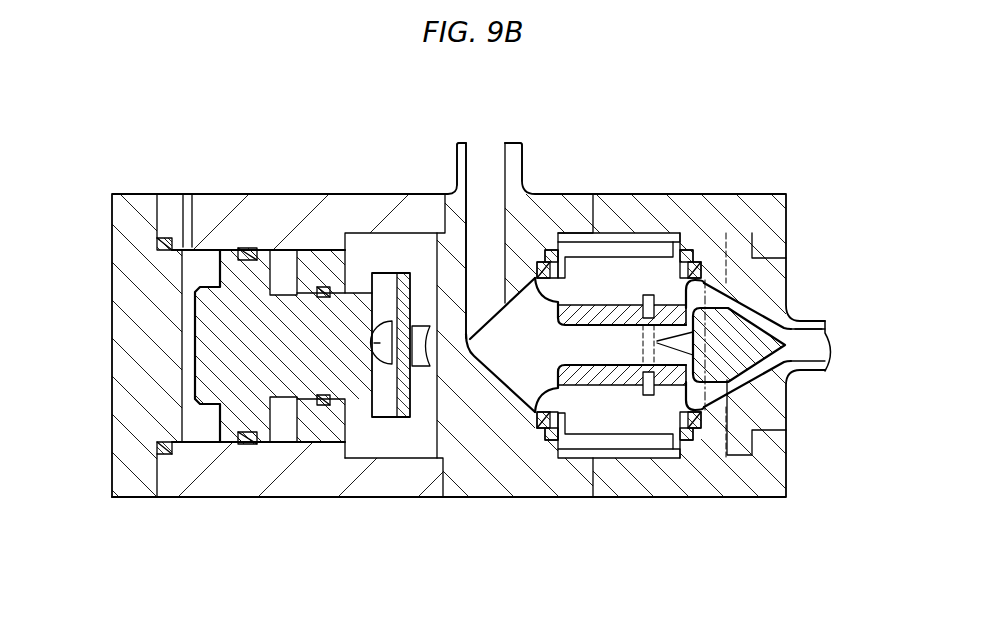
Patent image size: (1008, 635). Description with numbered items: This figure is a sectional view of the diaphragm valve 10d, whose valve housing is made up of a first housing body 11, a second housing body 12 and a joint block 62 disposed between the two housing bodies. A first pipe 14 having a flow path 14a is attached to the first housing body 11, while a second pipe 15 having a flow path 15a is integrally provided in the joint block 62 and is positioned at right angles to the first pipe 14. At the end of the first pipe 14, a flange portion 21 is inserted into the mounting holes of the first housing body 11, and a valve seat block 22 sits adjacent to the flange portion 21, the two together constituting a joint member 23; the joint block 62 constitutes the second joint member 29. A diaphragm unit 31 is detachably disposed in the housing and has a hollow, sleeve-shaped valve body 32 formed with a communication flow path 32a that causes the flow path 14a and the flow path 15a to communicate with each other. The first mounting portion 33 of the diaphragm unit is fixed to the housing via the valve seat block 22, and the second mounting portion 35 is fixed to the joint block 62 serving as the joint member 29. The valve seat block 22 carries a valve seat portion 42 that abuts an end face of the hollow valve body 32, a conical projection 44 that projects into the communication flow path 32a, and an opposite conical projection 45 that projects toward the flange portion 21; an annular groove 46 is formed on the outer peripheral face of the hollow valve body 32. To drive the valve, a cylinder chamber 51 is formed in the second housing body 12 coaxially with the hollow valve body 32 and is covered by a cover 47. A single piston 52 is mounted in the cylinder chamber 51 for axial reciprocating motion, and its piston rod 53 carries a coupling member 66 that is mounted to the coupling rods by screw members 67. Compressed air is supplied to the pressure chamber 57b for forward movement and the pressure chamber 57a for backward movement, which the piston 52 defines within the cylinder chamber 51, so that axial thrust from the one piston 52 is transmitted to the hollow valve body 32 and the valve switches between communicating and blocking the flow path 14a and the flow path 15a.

The diaphragm valve 10d is at (777, 175).
The first housing body 11 is at (673, 212).
The second housing body 12 is at (268, 213).
The first pipe 14 is at (800, 316).
The flow path 14a is at (807, 348).
The second pipe 15 is at (510, 163).
The flow path 15a is at (478, 173).
The flange portion 21 is at (763, 418).
The valve seat block 22 is at (703, 251).
The joint member 23 is at (734, 271).
The second joint member 29 is at (487, 448).
The diaphragm unit 31 is at (641, 447).
The hollow valve body 32 is at (575, 375).
The communication flow path 32a is at (598, 335).
The first mounting portion 33 is at (710, 430).
The second mounting portion 35 is at (533, 422).
The valve seat portion 42 is at (770, 388).
The conical projection 44 is at (656, 343).
The conical projection 45 is at (803, 334).
The annular groove 46 is at (643, 291).
The cover 47 is at (147, 405).
The cylinder chamber 51 is at (197, 269).
The piston 52 is at (245, 323).
The piston rod 53 is at (317, 351).
The pressure chamber for backward movement 57a is at (283, 425).
The pressure chamber for forward movement 57b is at (200, 425).
The joint block 62 is at (563, 212).
The coupling member 66 is at (402, 290).
The screw member 67 is at (380, 338).